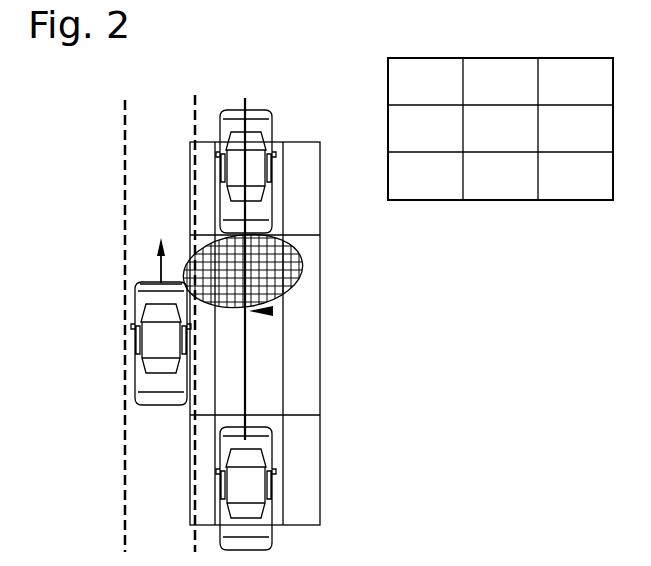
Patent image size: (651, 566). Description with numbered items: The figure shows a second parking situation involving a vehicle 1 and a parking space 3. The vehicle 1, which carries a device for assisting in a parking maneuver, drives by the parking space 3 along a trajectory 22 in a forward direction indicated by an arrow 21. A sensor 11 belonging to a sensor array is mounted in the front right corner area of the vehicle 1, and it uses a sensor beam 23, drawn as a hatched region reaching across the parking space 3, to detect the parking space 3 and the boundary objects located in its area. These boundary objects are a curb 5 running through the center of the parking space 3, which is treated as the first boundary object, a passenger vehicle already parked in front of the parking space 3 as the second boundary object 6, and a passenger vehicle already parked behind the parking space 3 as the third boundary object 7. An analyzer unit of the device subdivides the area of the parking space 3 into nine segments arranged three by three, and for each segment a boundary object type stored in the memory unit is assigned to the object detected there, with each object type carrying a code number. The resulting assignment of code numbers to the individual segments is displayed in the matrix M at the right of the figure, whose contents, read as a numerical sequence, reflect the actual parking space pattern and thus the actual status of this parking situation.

The vehicle 1 is at (153, 401).
The parking space 3 is at (270, 353).
The curb 5 is at (273, 311).
The second boundary object 6 is at (252, 128).
The third boundary object 7 is at (272, 534).
The sensor 11 is at (183, 286).
The arrow 21 is at (160, 272).
The trajectory 22 is at (175, 152).
The sensor beam 23 is at (290, 271).
The matrix M is at (520, 255).